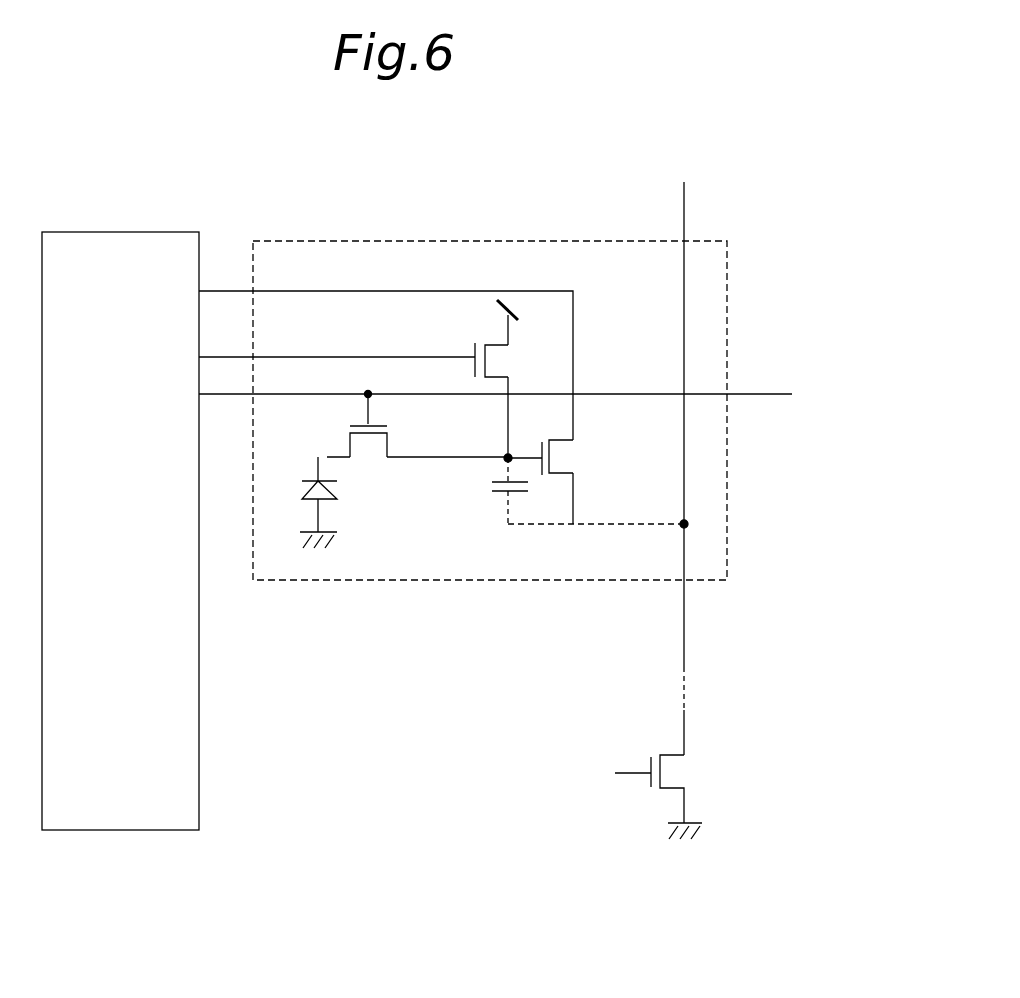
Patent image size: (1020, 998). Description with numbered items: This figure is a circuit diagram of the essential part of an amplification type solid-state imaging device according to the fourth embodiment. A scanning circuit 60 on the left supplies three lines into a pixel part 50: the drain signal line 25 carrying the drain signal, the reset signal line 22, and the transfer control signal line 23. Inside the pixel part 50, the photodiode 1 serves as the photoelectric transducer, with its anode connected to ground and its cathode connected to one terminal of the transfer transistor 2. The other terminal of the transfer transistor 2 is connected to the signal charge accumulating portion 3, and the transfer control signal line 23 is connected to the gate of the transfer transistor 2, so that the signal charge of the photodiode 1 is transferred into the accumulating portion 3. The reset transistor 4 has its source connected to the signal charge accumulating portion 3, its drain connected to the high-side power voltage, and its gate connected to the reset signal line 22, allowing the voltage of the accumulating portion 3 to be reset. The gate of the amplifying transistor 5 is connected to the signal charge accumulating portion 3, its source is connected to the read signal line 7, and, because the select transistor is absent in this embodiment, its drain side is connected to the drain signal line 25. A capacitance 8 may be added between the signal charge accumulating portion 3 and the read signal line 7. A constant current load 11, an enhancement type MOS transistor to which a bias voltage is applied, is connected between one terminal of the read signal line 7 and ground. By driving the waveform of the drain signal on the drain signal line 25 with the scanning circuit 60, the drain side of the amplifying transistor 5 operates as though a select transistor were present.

The photodiode 1 is at (298, 487).
The transfer transistor 2 is at (367, 443).
The signal charge accumulating portion 3 is at (505, 455).
The reset transistor 4 is at (497, 360).
The amplifying transistor 5 is at (573, 458).
The read signal line 7 is at (687, 607).
The capacitance 8 is at (493, 498).
The constant current load 11 is at (678, 772).
The reset signal line 22 is at (372, 358).
The transfer control signal line 23 is at (757, 394).
The drain signal line 25 is at (393, 292).
The pixel part 50 is at (500, 210).
The scanning circuit 60 is at (118, 830).